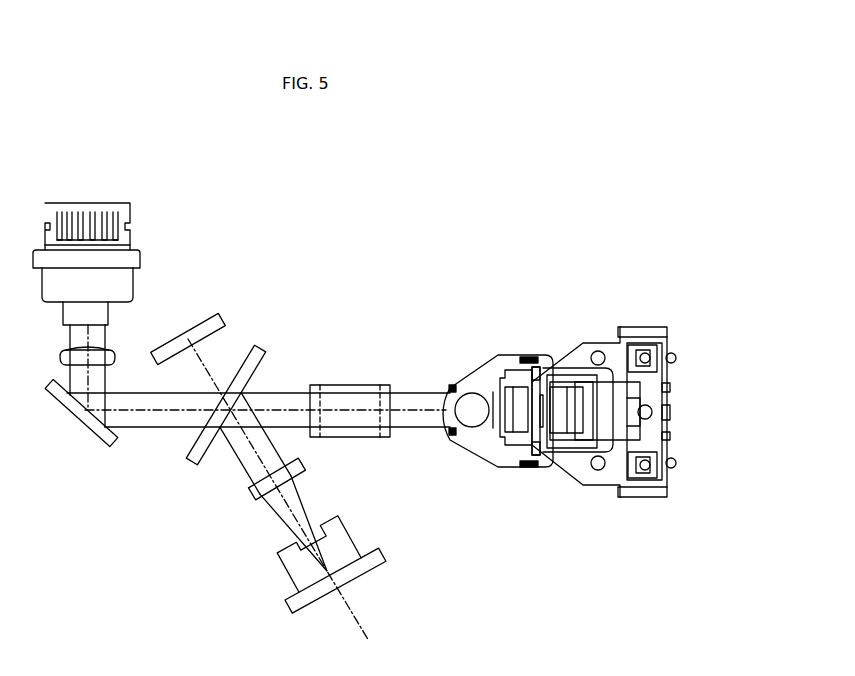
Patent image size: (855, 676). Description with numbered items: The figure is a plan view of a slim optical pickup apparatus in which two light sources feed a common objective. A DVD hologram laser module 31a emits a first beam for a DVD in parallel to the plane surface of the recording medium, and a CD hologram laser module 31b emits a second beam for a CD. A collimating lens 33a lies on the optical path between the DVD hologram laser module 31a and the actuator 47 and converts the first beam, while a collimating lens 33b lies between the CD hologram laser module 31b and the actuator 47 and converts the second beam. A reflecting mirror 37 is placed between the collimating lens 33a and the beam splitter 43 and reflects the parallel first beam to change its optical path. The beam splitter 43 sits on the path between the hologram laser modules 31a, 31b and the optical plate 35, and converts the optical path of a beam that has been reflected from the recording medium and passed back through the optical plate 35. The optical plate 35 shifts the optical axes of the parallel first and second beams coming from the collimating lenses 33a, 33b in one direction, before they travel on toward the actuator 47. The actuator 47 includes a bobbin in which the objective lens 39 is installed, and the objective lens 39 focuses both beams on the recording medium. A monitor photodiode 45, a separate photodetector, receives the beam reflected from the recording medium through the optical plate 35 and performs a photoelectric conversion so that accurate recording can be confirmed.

The DVD hologram laser module 31a is at (88, 203).
The collimating lens 33a is at (110, 353).
The reflecting mirror 37 is at (82, 418).
The monitor photodiode 45 is at (222, 325).
The beam splitter 43 is at (263, 352).
The optical plate 35 is at (348, 385).
The objective lens 39 is at (468, 393).
The actuator 47 is at (512, 355).
The collimating lens 33b is at (306, 469).
The CD hologram laser module 31b is at (338, 591).